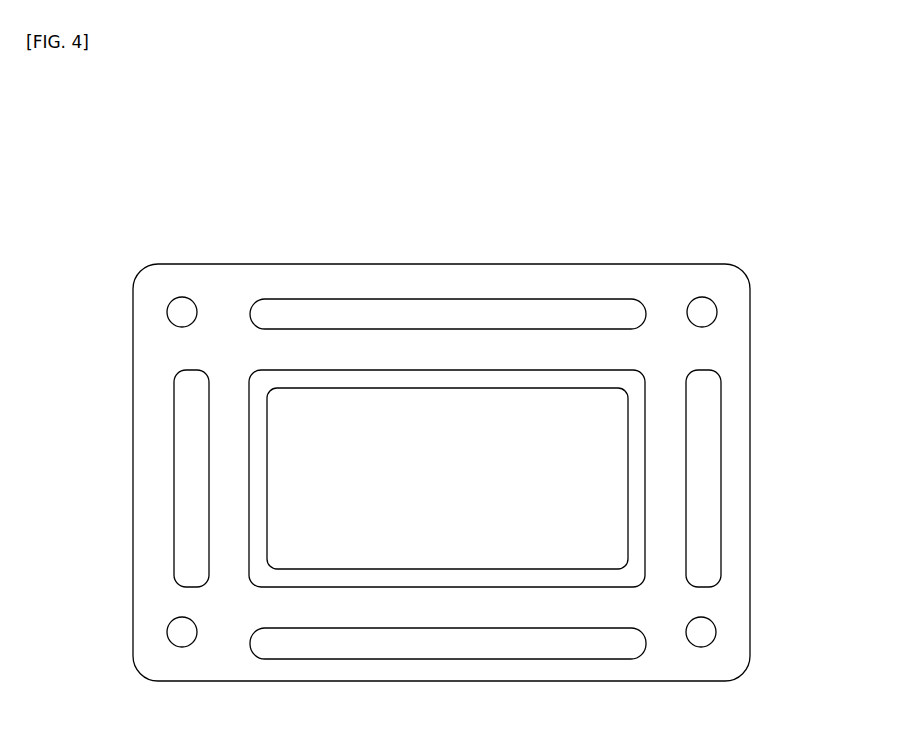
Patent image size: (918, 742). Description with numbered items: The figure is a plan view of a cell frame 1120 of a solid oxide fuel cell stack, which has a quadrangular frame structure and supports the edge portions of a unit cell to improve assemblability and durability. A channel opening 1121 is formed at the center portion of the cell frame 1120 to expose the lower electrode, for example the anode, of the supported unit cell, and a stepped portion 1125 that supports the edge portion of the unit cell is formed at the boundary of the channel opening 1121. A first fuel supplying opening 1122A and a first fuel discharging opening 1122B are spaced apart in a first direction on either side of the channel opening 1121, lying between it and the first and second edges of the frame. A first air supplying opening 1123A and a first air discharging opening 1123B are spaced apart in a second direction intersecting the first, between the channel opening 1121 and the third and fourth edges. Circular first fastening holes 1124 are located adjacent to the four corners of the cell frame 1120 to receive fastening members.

The cell frame 1120 is at (474, 144).
The channel opening 1121 is at (496, 425).
The first fuel supplying opening 1122A is at (190, 488).
The first fuel discharging opening 1122B is at (703, 468).
The first air supplying opening 1123A is at (452, 318).
The first air discharging opening 1123B is at (470, 644).
The first fastening holes 1124 is at (182, 641).
The stepped portion 1125 is at (596, 370).